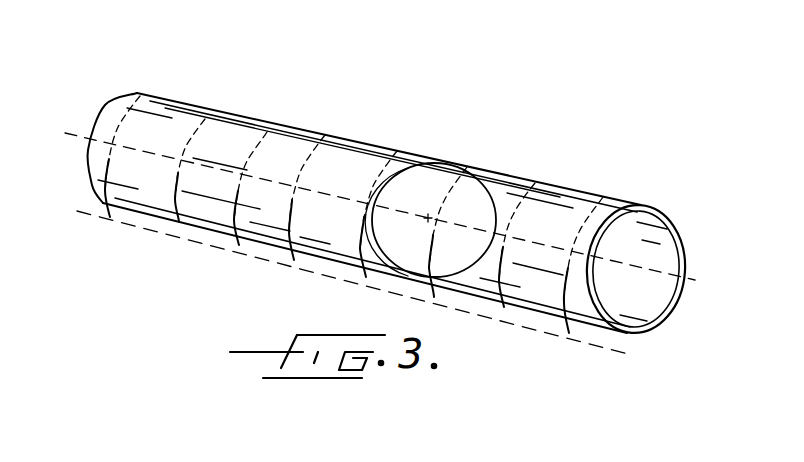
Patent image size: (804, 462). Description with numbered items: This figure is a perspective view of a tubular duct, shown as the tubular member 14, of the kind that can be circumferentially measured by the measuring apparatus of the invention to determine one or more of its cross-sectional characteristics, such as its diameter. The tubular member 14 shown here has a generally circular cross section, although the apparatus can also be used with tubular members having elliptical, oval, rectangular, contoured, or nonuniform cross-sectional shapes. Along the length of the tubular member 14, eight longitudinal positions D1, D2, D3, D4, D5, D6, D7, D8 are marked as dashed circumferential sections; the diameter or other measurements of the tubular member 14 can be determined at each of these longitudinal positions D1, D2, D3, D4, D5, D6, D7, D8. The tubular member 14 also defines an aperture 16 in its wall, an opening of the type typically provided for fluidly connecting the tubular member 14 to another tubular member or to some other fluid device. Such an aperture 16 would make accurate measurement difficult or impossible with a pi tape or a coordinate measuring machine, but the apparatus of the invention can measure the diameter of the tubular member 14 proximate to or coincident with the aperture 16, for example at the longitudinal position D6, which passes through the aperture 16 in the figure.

The tubular member 14 is at (318, 118).
The aperture 16 is at (482, 186).
The longitudinal position D1 is at (127, 166).
The longitudinal position D2 is at (191, 185).
The longitudinal position D3 is at (250, 201).
The longitudinal position D4 is at (310, 208).
The longitudinal position D5 is at (378, 223).
The longitudinal position D6 is at (447, 241).
The longitudinal position D7 is at (517, 259).
The longitudinal position D8 is at (583, 274).